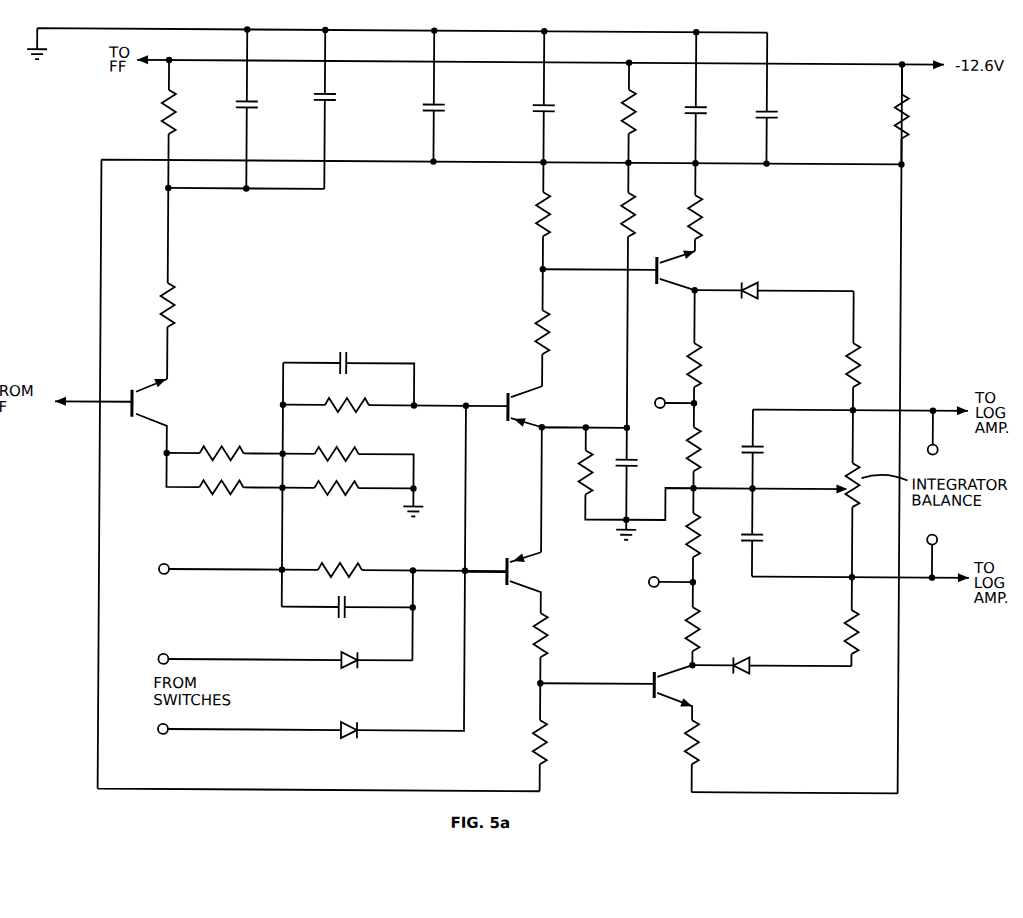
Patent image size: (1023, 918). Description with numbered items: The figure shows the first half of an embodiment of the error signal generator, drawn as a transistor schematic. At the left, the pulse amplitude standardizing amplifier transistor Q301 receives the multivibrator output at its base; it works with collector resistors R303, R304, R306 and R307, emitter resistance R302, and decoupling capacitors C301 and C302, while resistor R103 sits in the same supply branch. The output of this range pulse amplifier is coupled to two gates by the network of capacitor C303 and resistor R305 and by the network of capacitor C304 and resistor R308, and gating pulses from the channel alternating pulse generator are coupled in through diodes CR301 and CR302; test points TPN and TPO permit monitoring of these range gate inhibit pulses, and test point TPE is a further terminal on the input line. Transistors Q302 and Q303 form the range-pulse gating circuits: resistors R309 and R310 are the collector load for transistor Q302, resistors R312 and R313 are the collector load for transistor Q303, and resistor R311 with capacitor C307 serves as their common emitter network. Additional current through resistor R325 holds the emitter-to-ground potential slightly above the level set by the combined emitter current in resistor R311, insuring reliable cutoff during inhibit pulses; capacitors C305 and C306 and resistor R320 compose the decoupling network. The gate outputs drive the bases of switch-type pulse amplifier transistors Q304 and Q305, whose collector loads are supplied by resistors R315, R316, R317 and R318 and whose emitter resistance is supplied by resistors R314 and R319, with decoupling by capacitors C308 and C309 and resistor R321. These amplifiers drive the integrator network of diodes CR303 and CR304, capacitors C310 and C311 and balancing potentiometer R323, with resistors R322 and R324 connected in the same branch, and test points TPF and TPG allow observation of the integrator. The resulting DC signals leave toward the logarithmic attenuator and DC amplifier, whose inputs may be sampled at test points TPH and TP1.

The resistor R103 is at (161, 100).
The decoupling capacitor C301 is at (238, 100).
The decoupling capacitor C302 is at (318, 98).
The decoupling capacitor C305 is at (428, 108).
The decoupling capacitor C306 is at (548, 106).
The decoupling resistor R320 is at (634, 118).
The decoupling capacitor C308 is at (701, 107).
The decoupling capacitor C309 is at (777, 120).
The decoupling resistor R321 is at (910, 122).
The collector load resistor R309 is at (540, 230).
The emitter bias resistor R325 is at (618, 228).
The emitter resistor R319 is at (701, 204).
The collector load resistor R310 is at (550, 319).
The switch-type pulse amplifier transistor Q305 is at (666, 272).
The integrator diode CR303 is at (757, 282).
The collector load resistor R318 is at (703, 355).
The resistor R322 is at (848, 361).
The test point TPF is at (668, 394).
The collector load resistor R317 is at (698, 453).
The test point TPH is at (952, 451).
The test point TP1 is at (950, 543).
The integrator capacitor C310 is at (759, 450).
The balancing potentiometer R323 is at (848, 502).
The integrator capacitor C311 is at (758, 538).
The resistor R324 is at (846, 618).
The integrator diode CR304 is at (748, 677).
The collector load resistor R316 is at (700, 534).
The test point TPG is at (655, 584).
The collector load resistor R315 is at (697, 628).
The switch-type pulse amplifier transistor Q304 is at (662, 683).
The emitter resistor R314 is at (700, 731).
The range-pulse gating transistor Q302 is at (512, 407).
The common emitter capacitor C307 is at (635, 470).
The common emitter resistor R311 is at (580, 483).
The range-pulse gating transistor Q303 is at (514, 572).
The collector load resistor R312 is at (549, 622).
The collector load resistor R313 is at (549, 724).
The emitter resistance R302 is at (176, 299).
The pulse amplitude standardizing amplifier transistor Q301 is at (137, 403).
The collector resistor R303 is at (208, 447).
The collector resistor R304 is at (218, 496).
The coupling capacitor C303 is at (347, 351).
The coupling resistor R305 is at (348, 396).
The collector resistor R306 is at (346, 449).
The collector resistor R307 is at (347, 496).
The test point TPE is at (202, 568).
The coupling resistor R308 is at (343, 567).
The coupling capacitor C304 is at (338, 616).
The test point TPN is at (231, 658).
The gating pulse coupling diode CR301 is at (342, 673).
The test point TPO is at (231, 728).
The gating pulse coupling diode CR302 is at (341, 720).